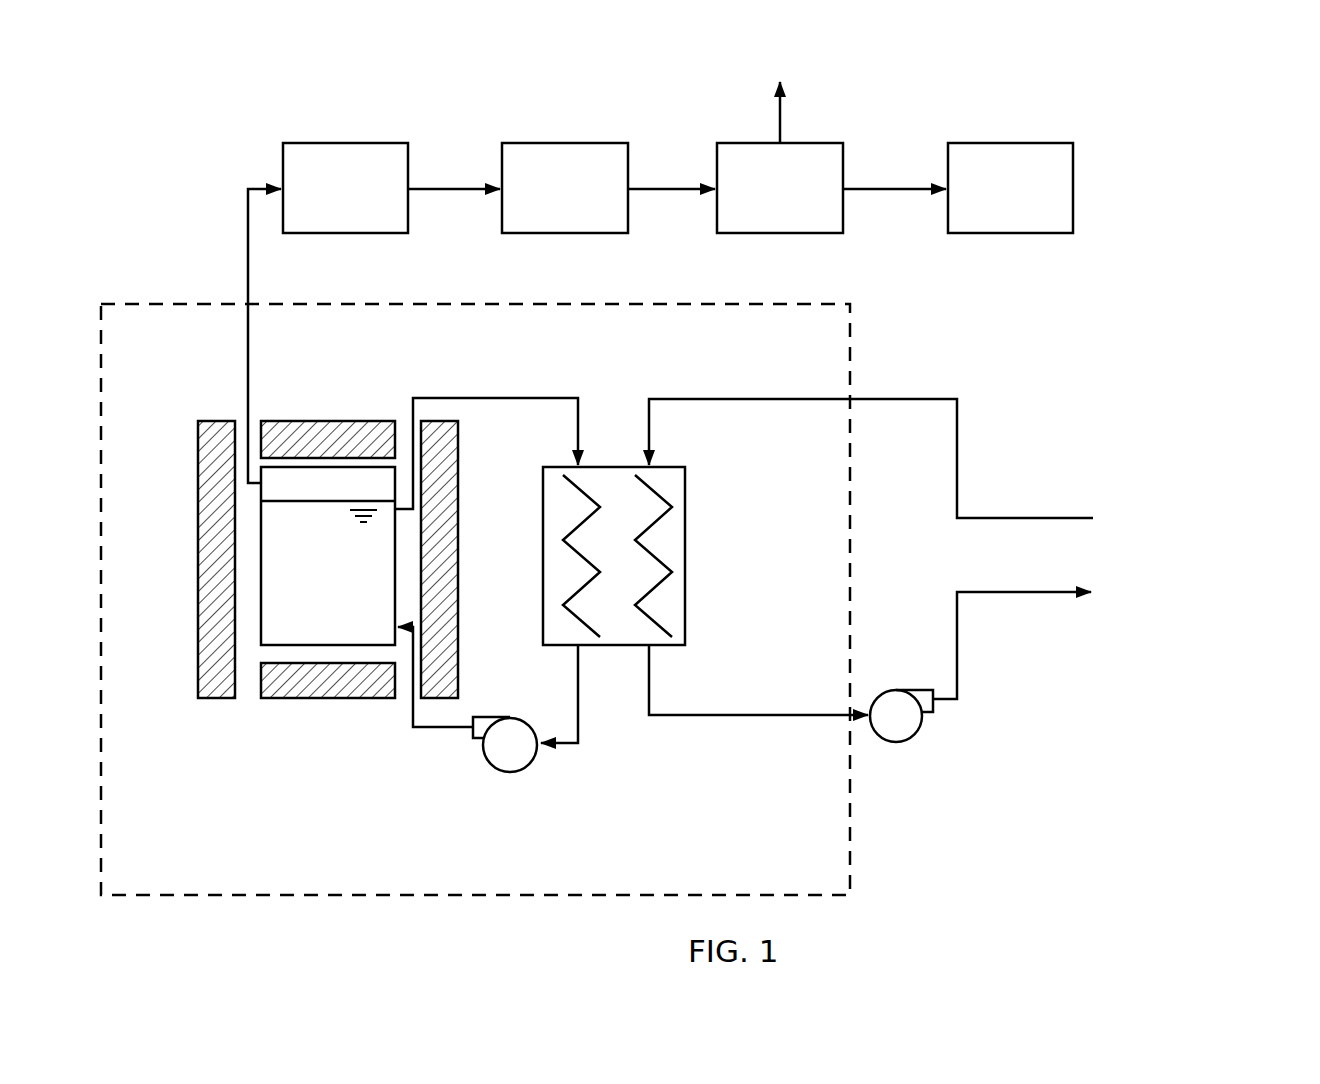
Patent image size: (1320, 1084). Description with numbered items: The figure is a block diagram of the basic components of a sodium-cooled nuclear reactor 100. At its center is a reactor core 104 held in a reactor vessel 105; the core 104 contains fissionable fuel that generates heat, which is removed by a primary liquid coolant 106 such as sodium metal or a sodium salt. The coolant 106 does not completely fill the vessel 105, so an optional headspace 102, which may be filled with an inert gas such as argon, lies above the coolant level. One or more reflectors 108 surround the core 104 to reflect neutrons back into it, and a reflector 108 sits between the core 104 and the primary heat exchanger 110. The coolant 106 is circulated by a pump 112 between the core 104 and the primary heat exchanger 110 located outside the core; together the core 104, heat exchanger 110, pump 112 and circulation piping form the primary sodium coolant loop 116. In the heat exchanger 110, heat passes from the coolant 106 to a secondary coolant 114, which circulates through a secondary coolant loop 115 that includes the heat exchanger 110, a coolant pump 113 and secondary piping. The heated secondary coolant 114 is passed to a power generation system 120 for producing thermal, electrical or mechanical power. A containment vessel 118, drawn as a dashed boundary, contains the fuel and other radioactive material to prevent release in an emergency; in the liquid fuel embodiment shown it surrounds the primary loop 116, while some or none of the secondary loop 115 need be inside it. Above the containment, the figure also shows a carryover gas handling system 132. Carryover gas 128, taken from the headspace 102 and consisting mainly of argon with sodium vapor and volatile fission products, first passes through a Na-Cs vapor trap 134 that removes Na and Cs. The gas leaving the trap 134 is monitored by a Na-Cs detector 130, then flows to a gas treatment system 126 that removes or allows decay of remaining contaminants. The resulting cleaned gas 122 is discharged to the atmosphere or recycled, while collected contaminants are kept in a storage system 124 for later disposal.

The reactor 100 is at (1219, 104).
The headspace 102 is at (327, 479).
The reactor core 104 is at (284, 564).
The reactor vessel 105 is at (261, 645).
The primary liquid coolant 106 is at (343, 605).
The reflector 108 is at (328, 420).
The primary heat exchanger 110 is at (614, 432).
The pump 112 is at (512, 771).
The coolant pump 113 is at (897, 742).
The secondary coolant 114 is at (753, 399).
The secondary coolant loop 115 is at (734, 782).
The primary sodium coolant loop 116 is at (418, 801).
The containment vessel 118 is at (850, 860).
The power generation system 120 is at (1069, 600).
The cleaned gas 122 is at (782, 101).
The storage system 124 is at (1033, 143).
The gas treatment system 126 is at (830, 143).
The carryover gas 128 is at (248, 215).
The Na-Cs detector 130 is at (596, 143).
The carryover gas handling system 132 is at (251, 124).
The Na-Cs vapor trap 134 is at (377, 143).